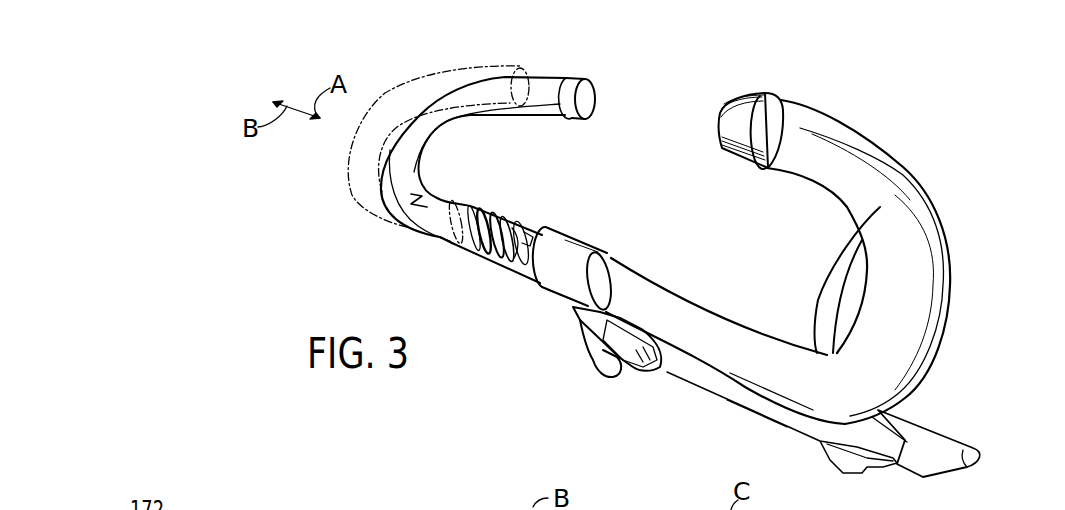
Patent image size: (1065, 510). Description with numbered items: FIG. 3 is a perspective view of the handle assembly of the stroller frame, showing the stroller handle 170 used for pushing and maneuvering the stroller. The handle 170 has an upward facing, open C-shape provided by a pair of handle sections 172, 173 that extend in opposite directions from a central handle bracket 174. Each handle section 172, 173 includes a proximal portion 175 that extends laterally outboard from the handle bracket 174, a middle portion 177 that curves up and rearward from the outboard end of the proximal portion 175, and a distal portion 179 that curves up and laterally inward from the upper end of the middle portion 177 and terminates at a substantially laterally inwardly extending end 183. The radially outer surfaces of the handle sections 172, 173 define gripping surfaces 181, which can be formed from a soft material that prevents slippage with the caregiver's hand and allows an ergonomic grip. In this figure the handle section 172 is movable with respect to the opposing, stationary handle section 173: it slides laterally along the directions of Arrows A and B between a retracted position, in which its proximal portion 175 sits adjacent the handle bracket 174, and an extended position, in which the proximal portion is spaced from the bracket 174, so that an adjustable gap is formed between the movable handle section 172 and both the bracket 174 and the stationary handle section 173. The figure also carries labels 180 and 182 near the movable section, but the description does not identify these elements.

The stroller handle 170 is at (853, 124).
The handle section 172 is at (398, 219).
The handle section 173 is at (933, 200).
The handle bracket 174 is at (563, 326).
The proximal portion 175 is at (448, 238).
The middle portion 177 is at (428, 152).
The distal portion 179 is at (565, 78).
The joint 180 is at (406, 227).
The gripping surfaces 181 is at (408, 87).
The adjusted position 182 is at (338, 158).
The laterally inwardly extending end 183 is at (721, 113).